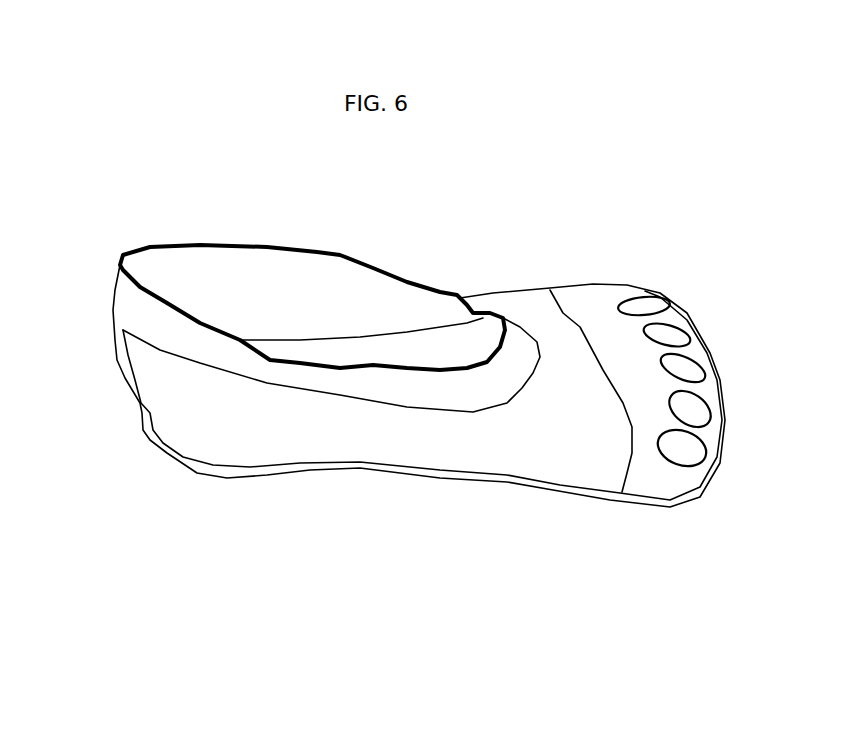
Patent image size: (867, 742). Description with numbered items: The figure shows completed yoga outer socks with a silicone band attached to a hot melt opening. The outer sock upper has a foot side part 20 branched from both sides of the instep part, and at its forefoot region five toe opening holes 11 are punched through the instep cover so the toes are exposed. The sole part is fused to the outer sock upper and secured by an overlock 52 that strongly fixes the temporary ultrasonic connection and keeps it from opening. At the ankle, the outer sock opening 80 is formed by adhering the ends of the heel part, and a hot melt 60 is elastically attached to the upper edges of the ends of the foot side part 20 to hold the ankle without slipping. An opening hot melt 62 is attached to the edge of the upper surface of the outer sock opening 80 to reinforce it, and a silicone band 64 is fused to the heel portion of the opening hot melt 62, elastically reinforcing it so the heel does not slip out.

The opening hole 11 is at (662, 297).
The foot side part 20 is at (513, 452).
The overlock 52 is at (290, 475).
The hot melt 60 is at (117, 367).
The opening hot melt 62 is at (428, 383).
The silicone band 64 is at (138, 307).
The outer sock opening 80 is at (332, 295).